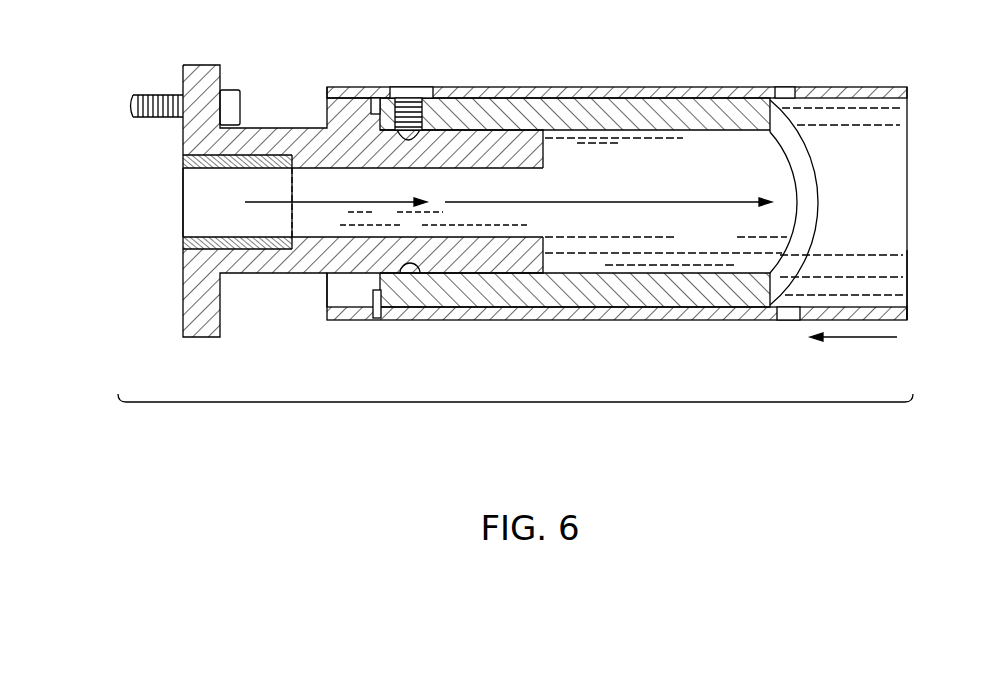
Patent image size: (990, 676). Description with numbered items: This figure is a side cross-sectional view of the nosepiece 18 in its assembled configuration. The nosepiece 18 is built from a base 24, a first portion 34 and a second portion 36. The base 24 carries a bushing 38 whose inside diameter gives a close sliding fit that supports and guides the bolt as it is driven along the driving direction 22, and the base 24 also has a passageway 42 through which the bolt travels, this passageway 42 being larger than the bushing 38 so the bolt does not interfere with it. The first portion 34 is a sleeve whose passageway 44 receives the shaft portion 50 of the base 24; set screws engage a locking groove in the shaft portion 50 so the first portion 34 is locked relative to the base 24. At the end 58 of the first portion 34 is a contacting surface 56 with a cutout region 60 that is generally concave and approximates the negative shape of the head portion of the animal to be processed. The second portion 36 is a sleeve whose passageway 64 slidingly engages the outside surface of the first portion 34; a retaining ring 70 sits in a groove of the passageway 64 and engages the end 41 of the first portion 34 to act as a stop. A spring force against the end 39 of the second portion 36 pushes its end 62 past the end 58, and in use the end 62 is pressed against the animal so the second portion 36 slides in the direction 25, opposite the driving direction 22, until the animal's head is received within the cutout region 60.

The nosepiece 18 is at (495, 414).
The driving direction 22 is at (330, 198).
The base 24 is at (273, 276).
The direction opposite of driving direction 25 is at (858, 340).
The first portion 34 is at (601, 103).
The second portion 36 is at (669, 79).
The bushing 38 is at (205, 212).
The end of second portion 39 is at (327, 313).
The end of first portion 41 is at (380, 122).
The passageway 42 is at (448, 213).
The passageway 44 is at (662, 258).
The shaft portion 50 is at (478, 140).
The contacting surface 56 is at (798, 157).
The end of first portion 58 is at (818, 207).
The cutout region 60 is at (807, 193).
The end of second portion 62 is at (907, 265).
The passageway 64 is at (893, 155).
The retaining ring 70 is at (373, 310).